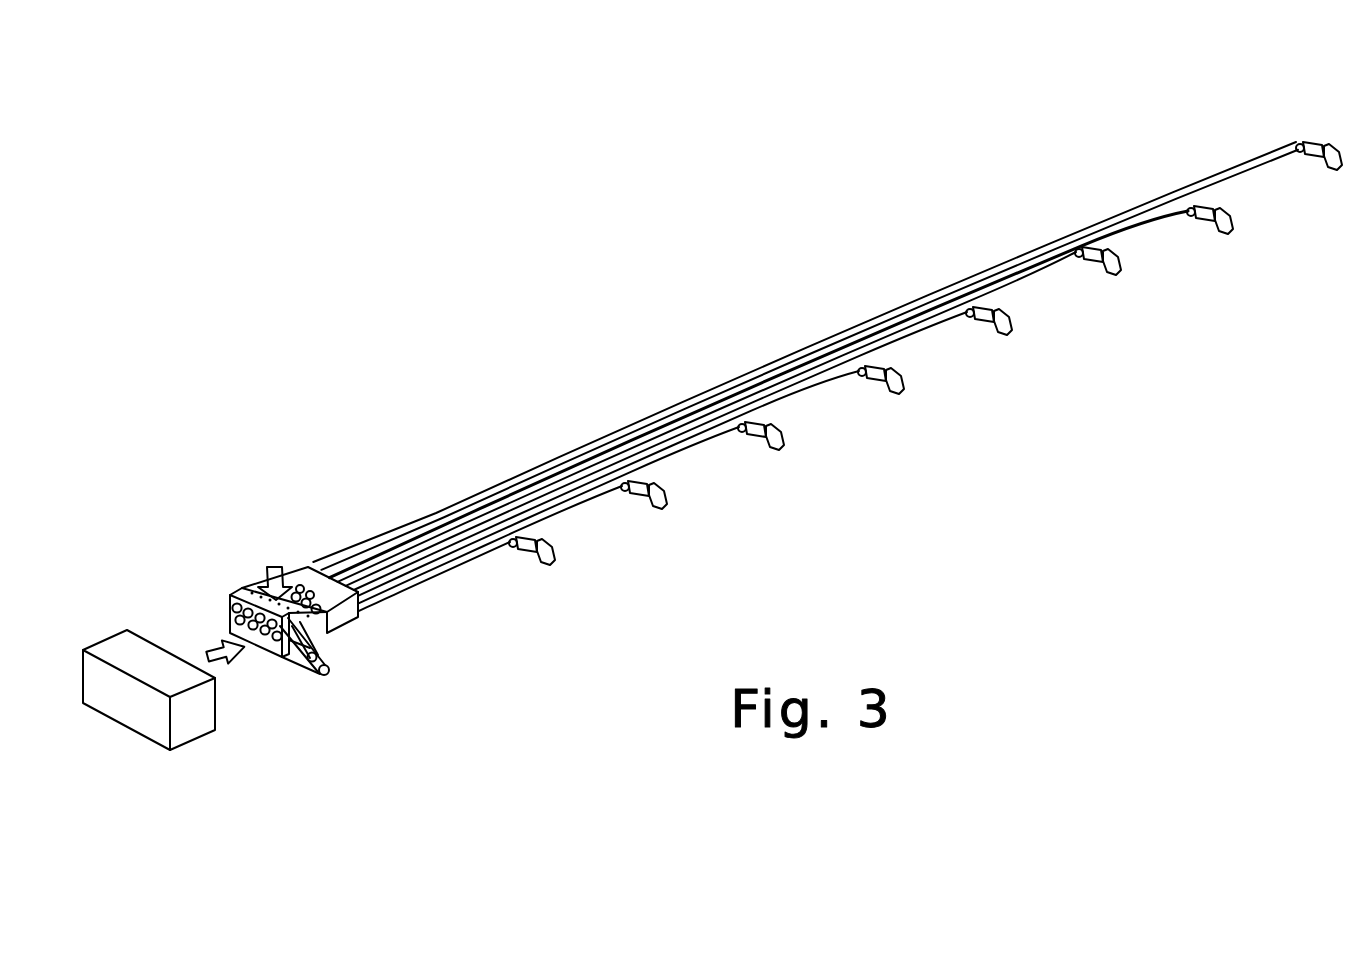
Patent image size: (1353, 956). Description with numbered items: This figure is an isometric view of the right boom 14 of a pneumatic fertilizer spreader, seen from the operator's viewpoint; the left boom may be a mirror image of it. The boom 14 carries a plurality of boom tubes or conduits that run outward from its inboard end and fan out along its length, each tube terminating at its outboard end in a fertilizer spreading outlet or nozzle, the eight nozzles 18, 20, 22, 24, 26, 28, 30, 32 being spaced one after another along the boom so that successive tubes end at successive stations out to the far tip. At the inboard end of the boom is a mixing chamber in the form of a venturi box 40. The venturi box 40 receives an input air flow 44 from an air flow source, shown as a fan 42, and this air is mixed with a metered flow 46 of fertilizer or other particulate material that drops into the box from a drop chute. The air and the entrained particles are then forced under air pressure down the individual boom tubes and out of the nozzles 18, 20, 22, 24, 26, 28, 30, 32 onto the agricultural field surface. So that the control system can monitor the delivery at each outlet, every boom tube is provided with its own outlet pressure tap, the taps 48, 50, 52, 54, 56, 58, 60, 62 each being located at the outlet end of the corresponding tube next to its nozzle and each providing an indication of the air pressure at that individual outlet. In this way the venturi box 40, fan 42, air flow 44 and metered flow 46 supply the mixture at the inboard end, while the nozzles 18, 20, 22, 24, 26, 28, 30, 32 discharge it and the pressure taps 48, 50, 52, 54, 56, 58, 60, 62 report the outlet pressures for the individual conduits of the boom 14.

The right boom 14 is at (703, 385).
The fertilizer spreading nozzle 18 is at (554, 568).
The fertilizer spreading nozzle 20 is at (671, 511).
The fertilizer spreading nozzle 22 is at (785, 451).
The fertilizer spreading nozzle 24 is at (902, 401).
The fertilizer spreading nozzle 26 is at (1007, 346).
The fertilizer spreading nozzle 28 is at (1119, 284).
The fertilizer spreading nozzle 30 is at (1231, 242).
The fertilizer spreading nozzle 32 is at (1321, 133).
The venturi box 40 is at (363, 657).
The fan 42 is at (195, 743).
The input air flow 44 is at (213, 645).
The metered flow 46 is at (270, 566).
The outlet pressure tap 48 is at (493, 569).
The outlet pressure tap 50 is at (607, 508).
The outlet pressure tap 52 is at (722, 449).
The outlet pressure tap 54 is at (844, 393).
The outlet pressure tap 56 is at (953, 335).
The outlet pressure tap 58 is at (1061, 279).
The outlet pressure tap 60 is at (1175, 237).
The outlet pressure tap 62 is at (1284, 175).